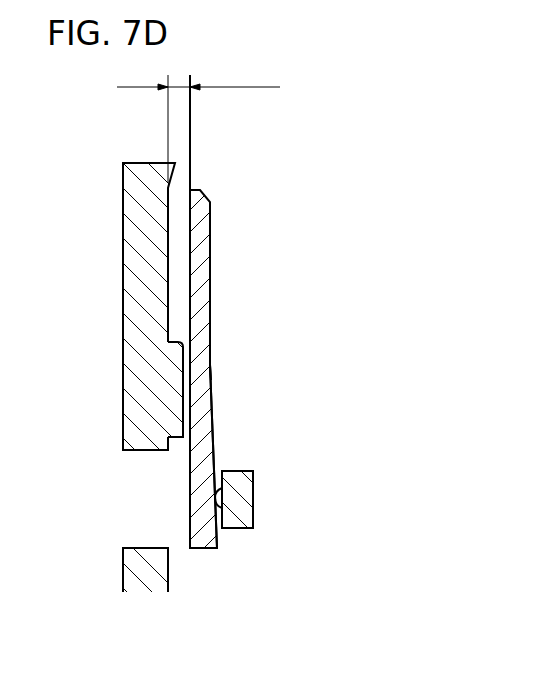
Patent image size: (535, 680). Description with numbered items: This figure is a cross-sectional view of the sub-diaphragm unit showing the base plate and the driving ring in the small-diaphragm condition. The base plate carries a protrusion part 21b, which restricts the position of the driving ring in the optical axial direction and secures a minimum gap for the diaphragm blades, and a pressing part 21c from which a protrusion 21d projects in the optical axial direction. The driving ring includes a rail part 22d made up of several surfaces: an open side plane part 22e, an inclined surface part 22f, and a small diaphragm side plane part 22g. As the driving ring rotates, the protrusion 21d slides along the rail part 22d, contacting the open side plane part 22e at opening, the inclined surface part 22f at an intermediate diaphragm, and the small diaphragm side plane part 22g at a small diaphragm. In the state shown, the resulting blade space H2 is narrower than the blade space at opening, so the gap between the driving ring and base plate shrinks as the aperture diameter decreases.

The protrusion part 21b is at (185, 388).
The pressing part 21c is at (241, 481).
The protrusion 21d is at (220, 497).
The rail part 22d is at (325, 193).
The open side plane part 22e is at (216, 446).
The inclined surface part 22f is at (211, 370).
The small diaphragm side plane part 22g is at (211, 270).
The blade space at the time of a small diaphragm H2 is at (198, 122).